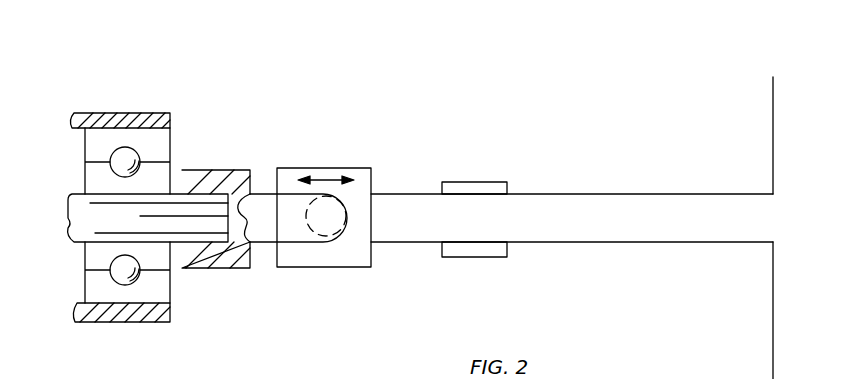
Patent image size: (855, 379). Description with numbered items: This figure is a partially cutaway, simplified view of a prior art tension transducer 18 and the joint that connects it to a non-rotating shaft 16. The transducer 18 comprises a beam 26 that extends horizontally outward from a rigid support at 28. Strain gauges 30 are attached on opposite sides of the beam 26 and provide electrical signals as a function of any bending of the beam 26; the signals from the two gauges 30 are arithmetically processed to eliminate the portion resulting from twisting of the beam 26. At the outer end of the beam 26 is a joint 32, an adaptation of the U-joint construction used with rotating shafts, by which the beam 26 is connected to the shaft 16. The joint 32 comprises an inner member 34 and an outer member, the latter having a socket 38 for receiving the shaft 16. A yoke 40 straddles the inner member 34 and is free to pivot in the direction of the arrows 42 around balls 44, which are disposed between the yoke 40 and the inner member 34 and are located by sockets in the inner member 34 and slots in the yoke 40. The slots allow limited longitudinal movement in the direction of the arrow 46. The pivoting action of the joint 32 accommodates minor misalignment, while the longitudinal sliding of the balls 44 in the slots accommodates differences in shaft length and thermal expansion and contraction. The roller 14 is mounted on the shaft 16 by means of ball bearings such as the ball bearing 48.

The roller 14 is at (140, 124).
The shaft 16 is at (176, 194).
The transducer 18 is at (664, 155).
The beam 26 is at (614, 232).
The rigid support 28 is at (773, 303).
The strain gauges 30 is at (502, 185).
The joint 32 is at (318, 136).
The inner member 34 is at (337, 258).
The socket 38 is at (196, 168).
The yoke 40 is at (290, 232).
The arrows 42 is at (263, 168).
The balls 44 is at (328, 222).
The arrow 46 is at (328, 178).
The ball bearing 48 is at (165, 286).